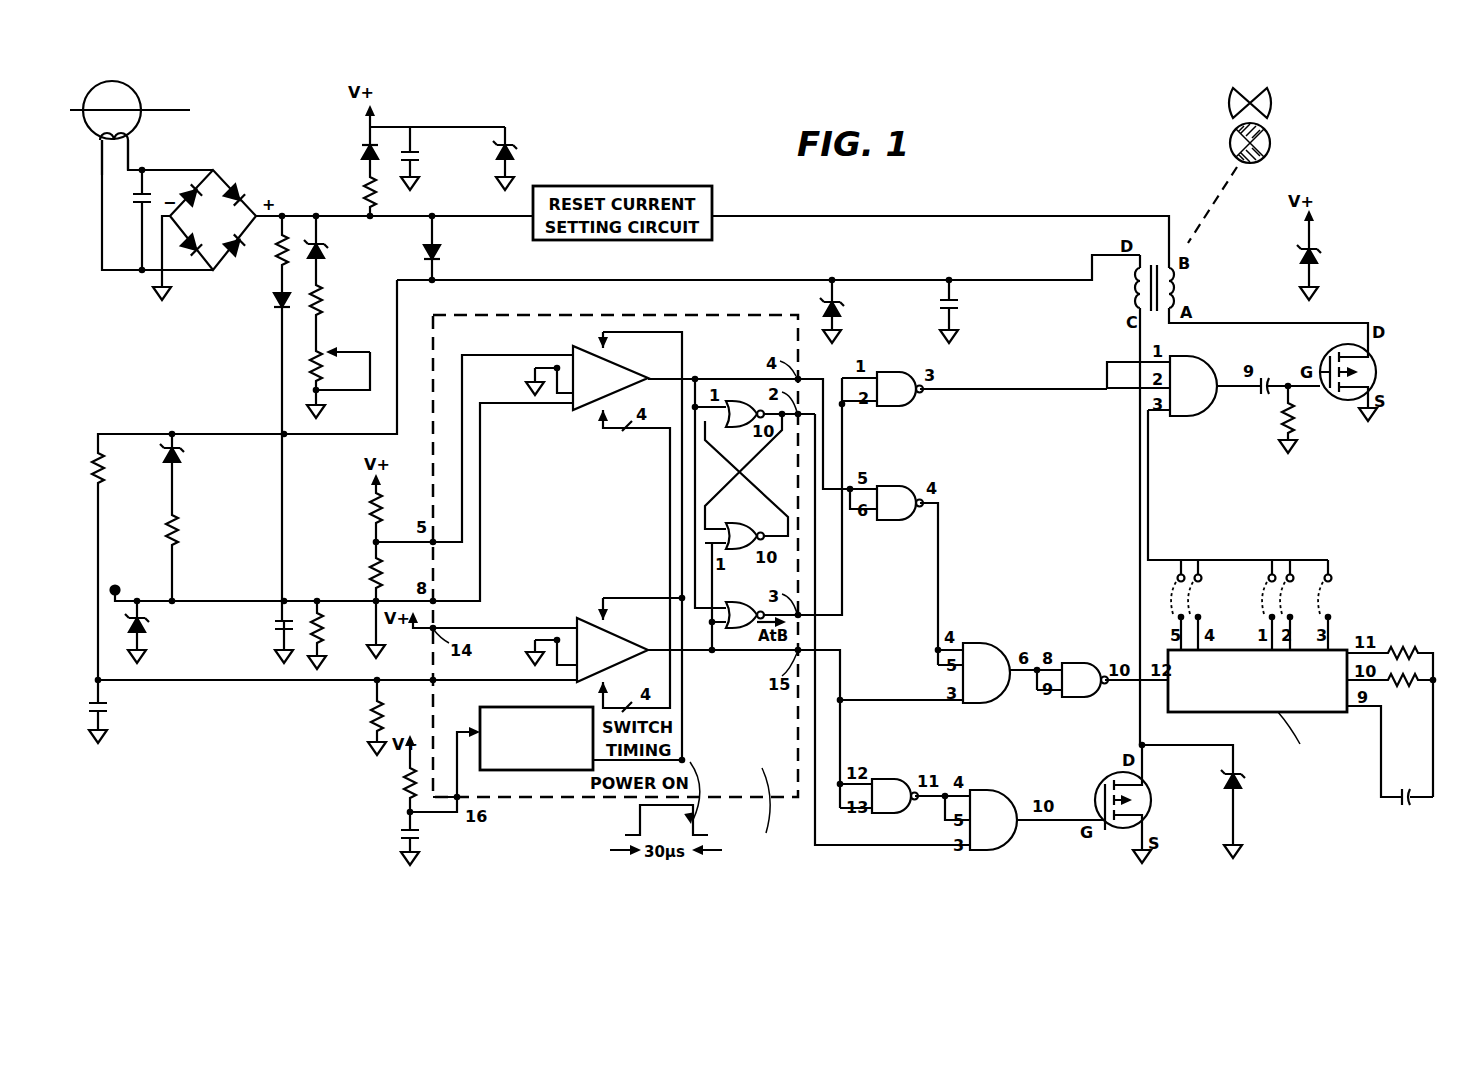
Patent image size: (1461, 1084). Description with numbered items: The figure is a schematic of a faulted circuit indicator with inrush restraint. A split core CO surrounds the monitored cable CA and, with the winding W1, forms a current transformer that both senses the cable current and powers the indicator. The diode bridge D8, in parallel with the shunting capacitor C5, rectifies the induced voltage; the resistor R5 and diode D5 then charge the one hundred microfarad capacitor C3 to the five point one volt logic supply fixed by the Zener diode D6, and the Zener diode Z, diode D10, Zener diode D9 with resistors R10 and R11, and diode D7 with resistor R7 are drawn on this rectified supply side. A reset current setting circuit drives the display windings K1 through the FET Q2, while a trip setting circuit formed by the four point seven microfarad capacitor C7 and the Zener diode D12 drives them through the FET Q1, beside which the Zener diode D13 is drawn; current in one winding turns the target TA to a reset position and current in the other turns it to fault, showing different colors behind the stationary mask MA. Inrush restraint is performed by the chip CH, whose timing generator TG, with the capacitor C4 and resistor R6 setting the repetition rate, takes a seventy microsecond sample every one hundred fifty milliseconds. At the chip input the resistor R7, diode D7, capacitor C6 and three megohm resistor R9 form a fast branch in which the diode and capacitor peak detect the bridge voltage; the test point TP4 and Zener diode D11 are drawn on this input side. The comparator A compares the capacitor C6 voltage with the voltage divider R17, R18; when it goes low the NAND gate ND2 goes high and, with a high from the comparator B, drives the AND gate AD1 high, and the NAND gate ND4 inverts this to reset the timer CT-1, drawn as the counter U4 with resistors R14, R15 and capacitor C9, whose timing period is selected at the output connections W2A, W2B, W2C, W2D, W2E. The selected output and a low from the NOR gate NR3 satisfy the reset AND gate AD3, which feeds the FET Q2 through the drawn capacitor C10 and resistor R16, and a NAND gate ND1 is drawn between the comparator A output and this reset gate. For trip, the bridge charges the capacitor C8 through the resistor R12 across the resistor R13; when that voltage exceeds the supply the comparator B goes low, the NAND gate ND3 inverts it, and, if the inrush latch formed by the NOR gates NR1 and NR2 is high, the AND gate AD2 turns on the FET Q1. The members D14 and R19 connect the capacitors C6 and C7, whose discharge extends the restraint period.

The split core CO is at (120, 85).
The cable CA is at (156, 108).
The winding W1 is at (127, 140).
The shunting capacitor C5 is at (133, 220).
The diode bridge D8 is at (213, 220).
The resistor R7 is at (258, 259).
The diode D7 is at (244, 314).
The zener diode D9 is at (363, 258).
The resistor R10 is at (342, 309).
The potentiometer R11 is at (340, 370).
The diode D5 is at (335, 136).
The resistor R5 is at (351, 192).
The capacitor C3 is at (438, 161).
The zener diode Z is at (527, 148).
The diode D10 is at (473, 254).
The Zener diode D12 is at (876, 317).
The capacitor C7 is at (975, 317).
The transformer K1 is at (1251, 500).
The mask MA is at (1272, 103).
The target TA is at (1271, 143).
The Zener diode D6 is at (1344, 255).
The reset AND gate AD3 is at (1244, 353).
The capacitor C10 is at (1260, 419).
The resistor R16 is at (1308, 422).
The FET Q2 is at (1385, 381).
The resistor R12 is at (122, 473).
The member D14 is at (217, 466).
The member R19 is at (151, 533).
The test point TP4 is at (123, 582).
The capacitor C6 is at (276, 622).
The zener diode D11 is at (172, 642).
The voltage divider resistor R17 is at (356, 514).
The voltage divider resistor R18 is at (356, 575).
The resistor R9 is at (334, 630).
The capacitor C8 is at (124, 739).
The resistor R13 is at (352, 713).
The resistor R6 is at (395, 786).
The capacitor C4 is at (392, 855).
The timing generator TG is at (540, 770).
The comparator A is at (573, 410).
The comparator B is at (577, 620).
The NOR gate NR1 is at (733, 401).
The NOR gate NR2 is at (739, 523).
The NOR gate NR3 is at (737, 628).
The NAND gate ND1 is at (938, 416).
The NAND gate ND2 is at (899, 475).
The NAND gate ND3 is at (884, 752).
The NAND gate ND4 is at (1078, 662).
The AND gate AD1 is at (1030, 622).
The AND gate AD2 is at (1025, 850).
The chip CH is at (767, 827).
The FET Q1 is at (1159, 802).
The zener diode D13 is at (1238, 801).
The counter CD4060B U4 is at (1257, 681).
The timer CT-1 is at (1309, 734).
The switch W2A is at (1171, 605).
The switch W2B is at (1209, 605).
The switch W2C is at (1339, 605).
The switch W2D is at (1301, 605).
The switch W2E is at (1262, 605).
The resistor R14 is at (1390, 703).
The resistor R15 is at (1391, 701).
The capacitor C9 is at (1390, 781).